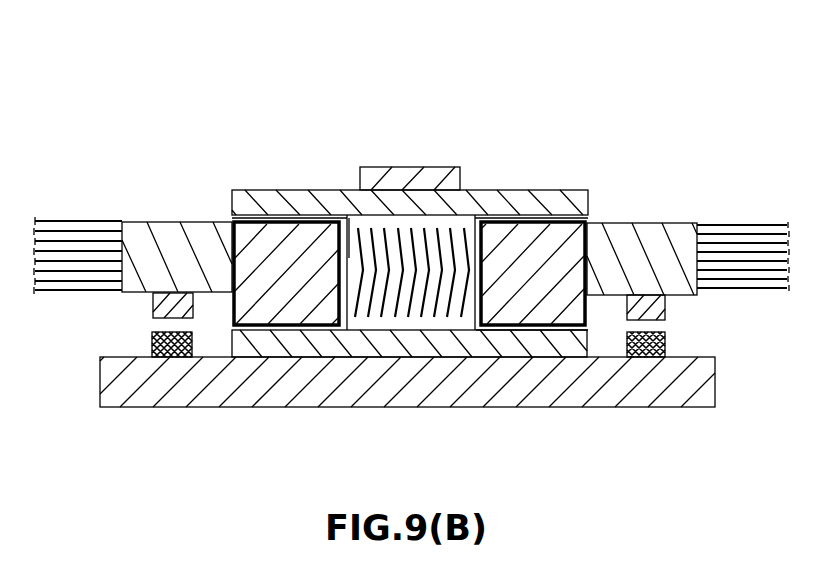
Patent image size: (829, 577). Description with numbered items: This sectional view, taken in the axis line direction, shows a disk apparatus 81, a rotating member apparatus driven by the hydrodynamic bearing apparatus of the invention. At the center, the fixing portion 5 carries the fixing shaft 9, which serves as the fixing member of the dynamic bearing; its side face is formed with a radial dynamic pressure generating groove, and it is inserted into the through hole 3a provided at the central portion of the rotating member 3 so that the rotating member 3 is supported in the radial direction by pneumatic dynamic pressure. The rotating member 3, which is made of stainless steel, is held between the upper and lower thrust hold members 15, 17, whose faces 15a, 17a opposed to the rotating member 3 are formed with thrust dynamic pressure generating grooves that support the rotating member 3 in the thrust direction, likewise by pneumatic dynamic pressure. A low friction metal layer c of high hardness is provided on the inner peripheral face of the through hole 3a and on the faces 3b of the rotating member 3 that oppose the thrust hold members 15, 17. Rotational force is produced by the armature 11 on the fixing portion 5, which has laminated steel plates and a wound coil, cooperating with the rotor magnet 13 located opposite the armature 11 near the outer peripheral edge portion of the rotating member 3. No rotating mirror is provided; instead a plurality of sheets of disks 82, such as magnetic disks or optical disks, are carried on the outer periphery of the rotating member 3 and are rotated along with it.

The electrostatic actuator / relay assembly 81 is at (602, 80).
The disks 82 is at (83, 222).
The rotating member 3 is at (159, 244).
The through hole 3a is at (339, 283).
The faces 3b is at (264, 222).
The low friction metal layer c is at (352, 218).
The fixing portion 5 is at (147, 382).
The fixing shaft 9 is at (390, 320).
The armature 11 is at (153, 335).
The rotor magnet 13 is at (153, 316).
The upper thrust hold member 15 is at (484, 200).
The face of upper thrust hold member 15a is at (574, 221).
The lower thrust hold member 17 is at (552, 343).
The face of lower thrust hold member 17a is at (565, 338).